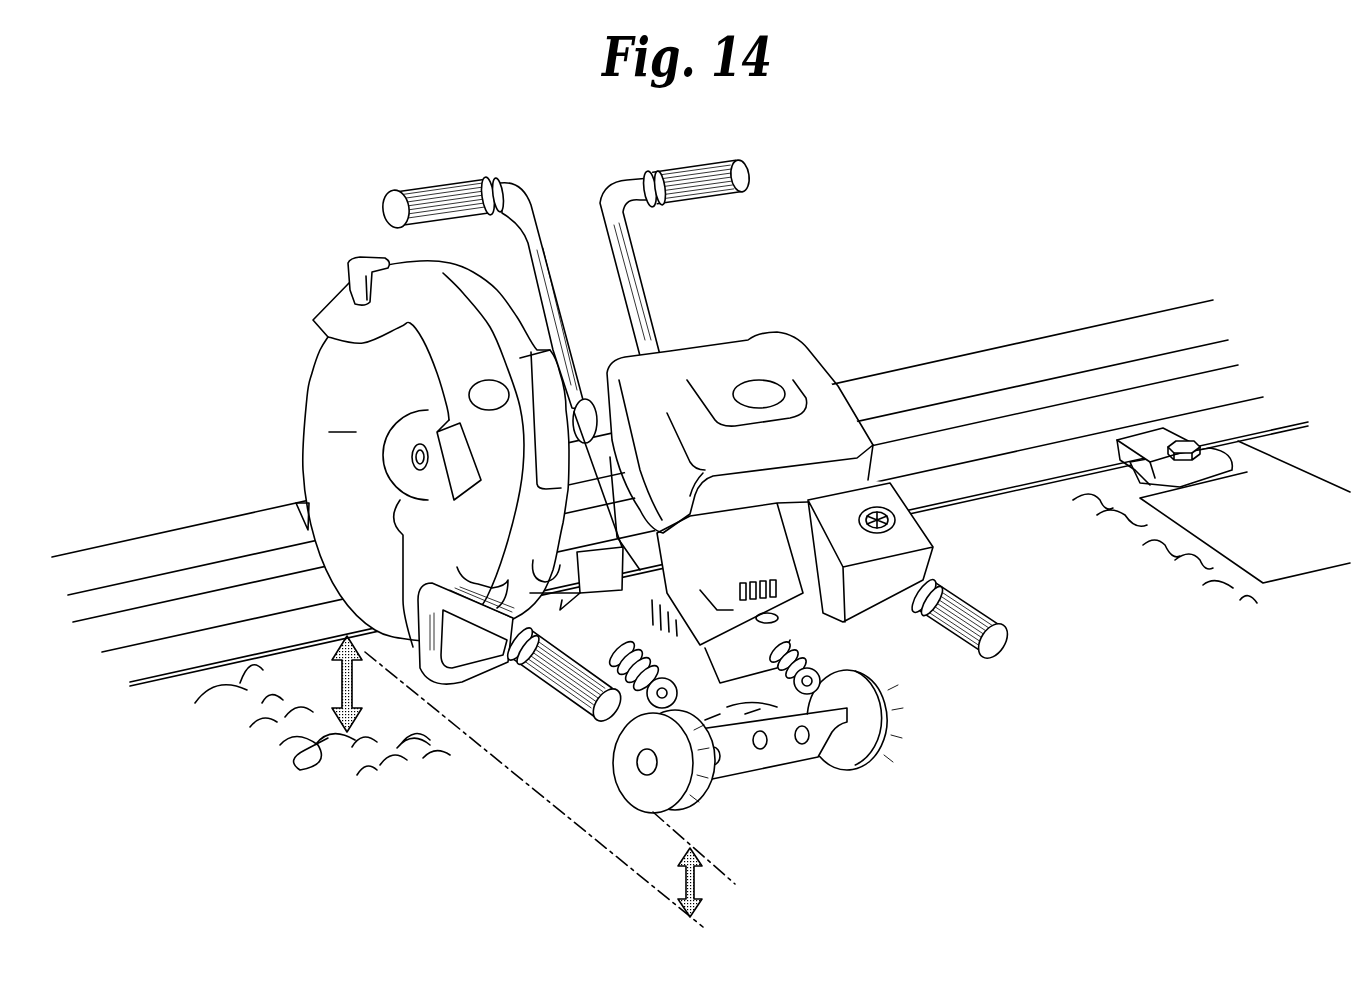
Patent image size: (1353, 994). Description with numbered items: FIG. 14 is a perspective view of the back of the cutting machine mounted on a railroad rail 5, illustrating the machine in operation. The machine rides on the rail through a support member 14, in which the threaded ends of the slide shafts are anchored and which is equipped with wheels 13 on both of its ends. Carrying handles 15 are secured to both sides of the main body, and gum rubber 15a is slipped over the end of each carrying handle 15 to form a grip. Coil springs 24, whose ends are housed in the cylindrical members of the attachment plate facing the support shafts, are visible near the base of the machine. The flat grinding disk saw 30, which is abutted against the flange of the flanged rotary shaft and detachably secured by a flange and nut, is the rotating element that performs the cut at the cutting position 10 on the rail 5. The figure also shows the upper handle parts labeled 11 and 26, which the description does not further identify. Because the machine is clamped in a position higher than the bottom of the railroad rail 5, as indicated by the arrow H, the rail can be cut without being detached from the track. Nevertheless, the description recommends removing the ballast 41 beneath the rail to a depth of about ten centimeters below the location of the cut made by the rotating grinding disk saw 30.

The railroad rail 5 is at (162, 532).
The cutting position 10 is at (312, 528).
The handle 11 is at (623, 261).
The wheels 13 is at (863, 746).
The support member 14 is at (763, 762).
The carrying handles 15 is at (503, 668).
The gum rubber 15a is at (560, 683).
The coil springs 24 is at (633, 648).
The handle 26 is at (512, 192).
The flat grinding disk saw 30 is at (436, 452).
The ballast 41 is at (290, 766).
The arrow H is at (700, 892).